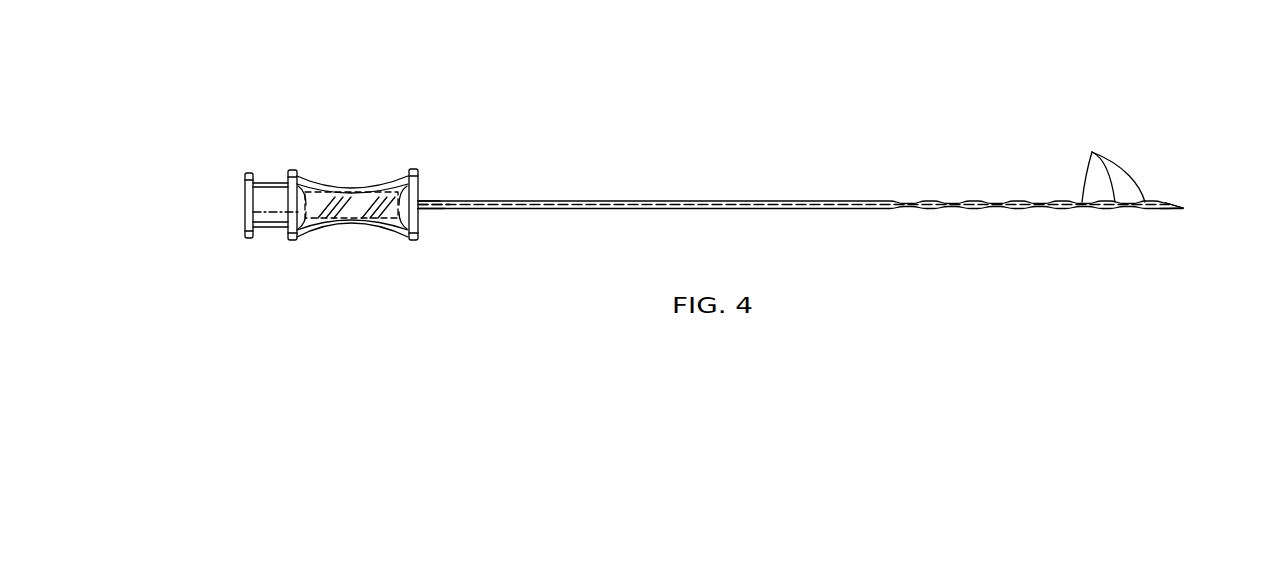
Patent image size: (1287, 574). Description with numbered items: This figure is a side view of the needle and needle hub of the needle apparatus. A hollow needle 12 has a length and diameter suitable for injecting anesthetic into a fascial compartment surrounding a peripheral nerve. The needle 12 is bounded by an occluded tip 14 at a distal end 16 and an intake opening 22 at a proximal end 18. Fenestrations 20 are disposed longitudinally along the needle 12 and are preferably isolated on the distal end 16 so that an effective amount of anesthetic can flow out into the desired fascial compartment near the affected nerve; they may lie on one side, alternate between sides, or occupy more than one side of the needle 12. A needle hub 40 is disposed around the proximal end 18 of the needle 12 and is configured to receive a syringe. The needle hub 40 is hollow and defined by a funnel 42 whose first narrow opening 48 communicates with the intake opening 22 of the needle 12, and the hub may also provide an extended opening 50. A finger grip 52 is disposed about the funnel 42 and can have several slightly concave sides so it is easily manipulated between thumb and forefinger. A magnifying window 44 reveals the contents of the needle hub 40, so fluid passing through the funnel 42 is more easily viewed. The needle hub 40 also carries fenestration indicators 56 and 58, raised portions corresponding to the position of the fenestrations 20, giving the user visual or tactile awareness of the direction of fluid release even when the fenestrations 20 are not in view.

The hollow needle 12 is at (800, 176).
The occluded tip 14 is at (1183, 208).
The distal end 16 is at (1162, 208).
The proximal end 18 is at (431, 210).
The fenestrations 20 is at (1142, 266).
The intake opening 22 is at (422, 200).
The needle hub 40 is at (396, 265).
The funnel 42 is at (375, 182).
The magnifying window 44 is at (338, 182).
The first narrow opening 48 is at (418, 197).
The extended opening 50 is at (249, 239).
The finger grip 52 is at (330, 232).
The fenestration indicator 56 is at (290, 168).
The fenestration indicator 58 is at (417, 168).